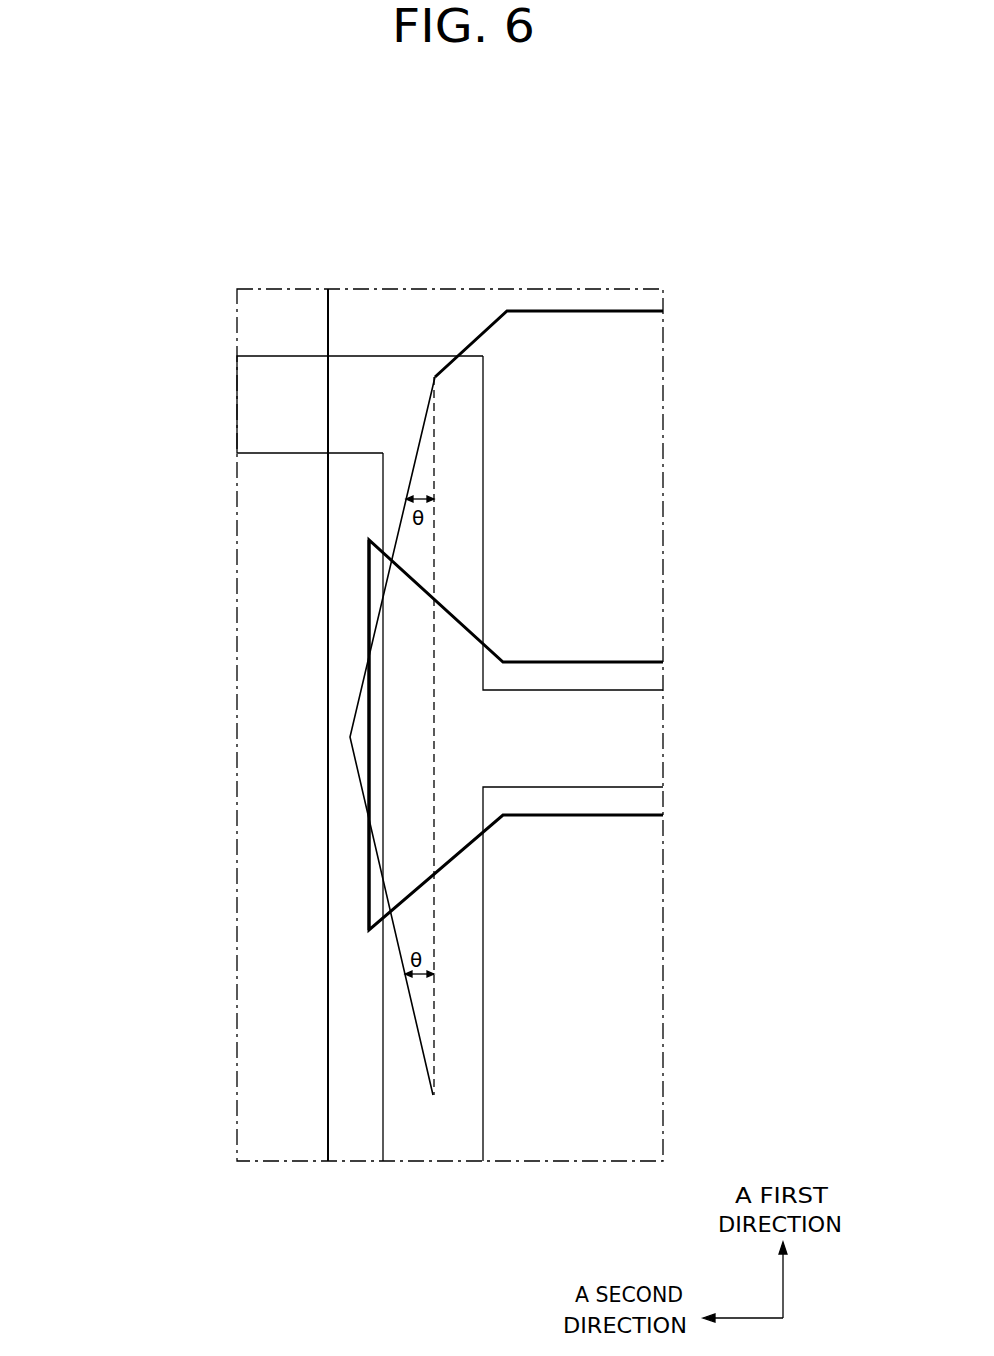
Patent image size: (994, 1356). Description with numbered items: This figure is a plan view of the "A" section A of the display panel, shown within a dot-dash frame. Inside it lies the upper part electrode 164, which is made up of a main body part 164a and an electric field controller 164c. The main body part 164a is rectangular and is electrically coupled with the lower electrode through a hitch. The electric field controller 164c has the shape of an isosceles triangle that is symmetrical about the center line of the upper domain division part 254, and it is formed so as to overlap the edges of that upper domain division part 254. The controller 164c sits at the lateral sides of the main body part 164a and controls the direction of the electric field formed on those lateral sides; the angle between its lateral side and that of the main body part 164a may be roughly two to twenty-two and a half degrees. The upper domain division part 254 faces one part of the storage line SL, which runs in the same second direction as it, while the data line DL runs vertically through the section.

The upper domain division part 254 is at (651, 740).
The upper part electrode 164 is at (356, 758).
The main body part 164a is at (502, 997).
The electric field controller 164c is at (400, 812).
The storage line SL is at (248, 405).
The data line DL is at (245, 1073).
The "A" section A is at (452, 289).